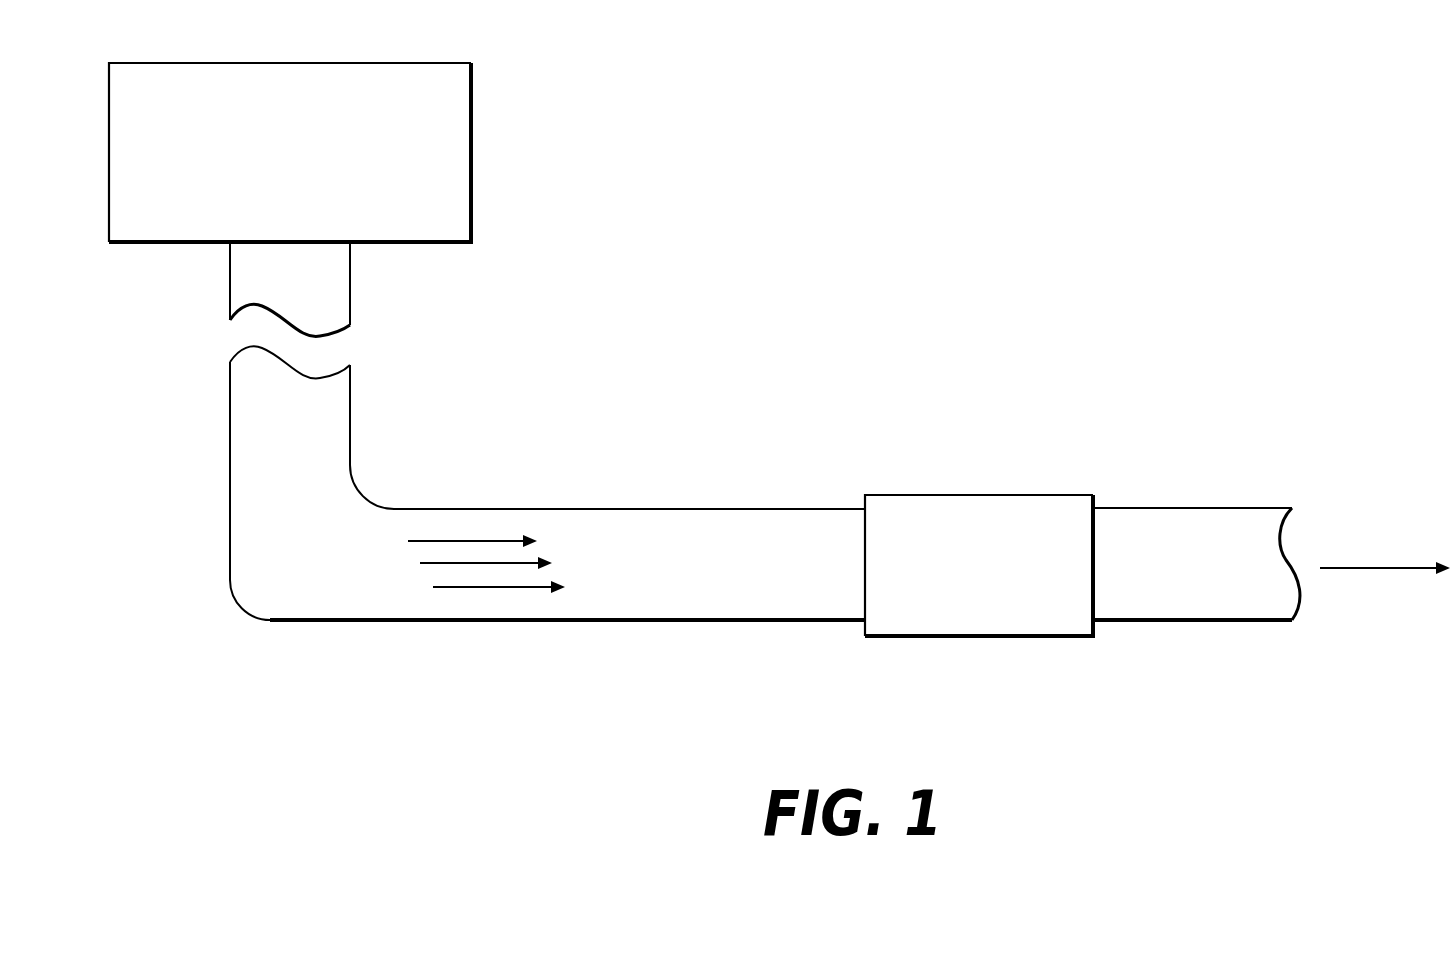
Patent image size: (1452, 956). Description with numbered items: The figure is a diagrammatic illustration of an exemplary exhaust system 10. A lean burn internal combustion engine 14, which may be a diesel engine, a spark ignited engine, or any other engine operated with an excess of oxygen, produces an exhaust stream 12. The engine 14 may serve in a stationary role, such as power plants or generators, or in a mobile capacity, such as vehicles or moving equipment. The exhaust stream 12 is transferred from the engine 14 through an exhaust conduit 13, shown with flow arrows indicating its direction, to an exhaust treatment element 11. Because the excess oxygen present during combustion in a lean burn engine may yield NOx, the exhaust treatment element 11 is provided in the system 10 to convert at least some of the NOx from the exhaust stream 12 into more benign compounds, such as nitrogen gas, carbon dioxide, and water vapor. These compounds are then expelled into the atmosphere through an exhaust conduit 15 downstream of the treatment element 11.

The exhaust system 10 is at (800, 307).
The exhaust treatment element 11 is at (965, 495).
The exhaust stream 12 is at (487, 541).
The exhaust conduit 13 is at (415, 509).
The lean burn internal combustion engine 14 is at (472, 150).
The exhaust conduit 15 is at (1175, 508).